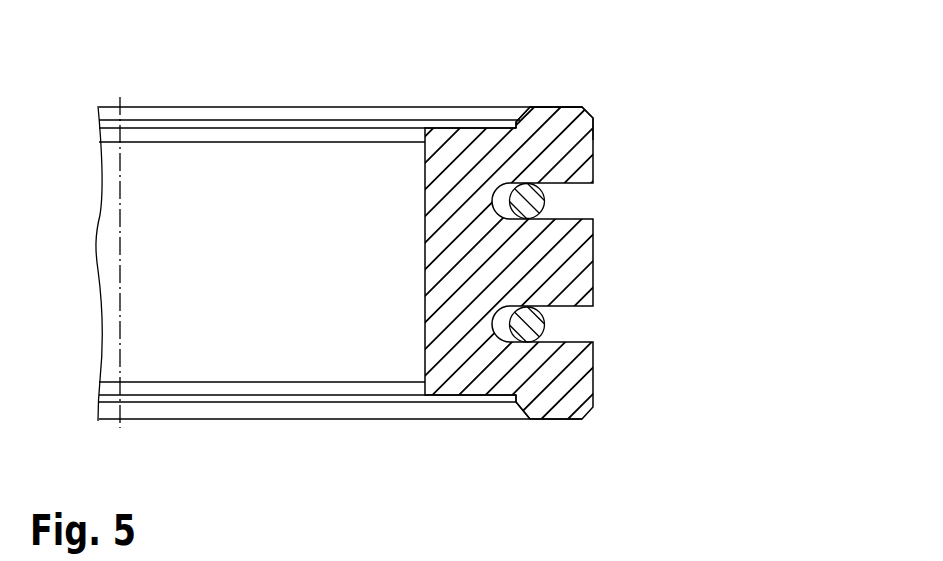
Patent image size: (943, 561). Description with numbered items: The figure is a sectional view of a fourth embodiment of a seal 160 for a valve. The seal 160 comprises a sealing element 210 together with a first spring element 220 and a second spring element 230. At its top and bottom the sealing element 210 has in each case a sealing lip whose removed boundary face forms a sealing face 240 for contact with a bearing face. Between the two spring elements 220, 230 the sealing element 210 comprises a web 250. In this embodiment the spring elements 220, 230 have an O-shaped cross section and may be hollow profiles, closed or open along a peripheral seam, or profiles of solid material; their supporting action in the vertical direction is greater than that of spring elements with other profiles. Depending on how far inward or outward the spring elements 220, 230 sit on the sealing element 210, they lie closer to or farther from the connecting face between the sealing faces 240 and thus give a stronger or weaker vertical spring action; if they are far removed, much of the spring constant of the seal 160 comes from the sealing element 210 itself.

The seal 160 is at (714, 80).
The sealing element 210 is at (585, 107).
The first spring element 220 is at (532, 201).
The second spring element 230 is at (532, 325).
The sealing face 240 is at (557, 92).
The web 250 is at (553, 263).